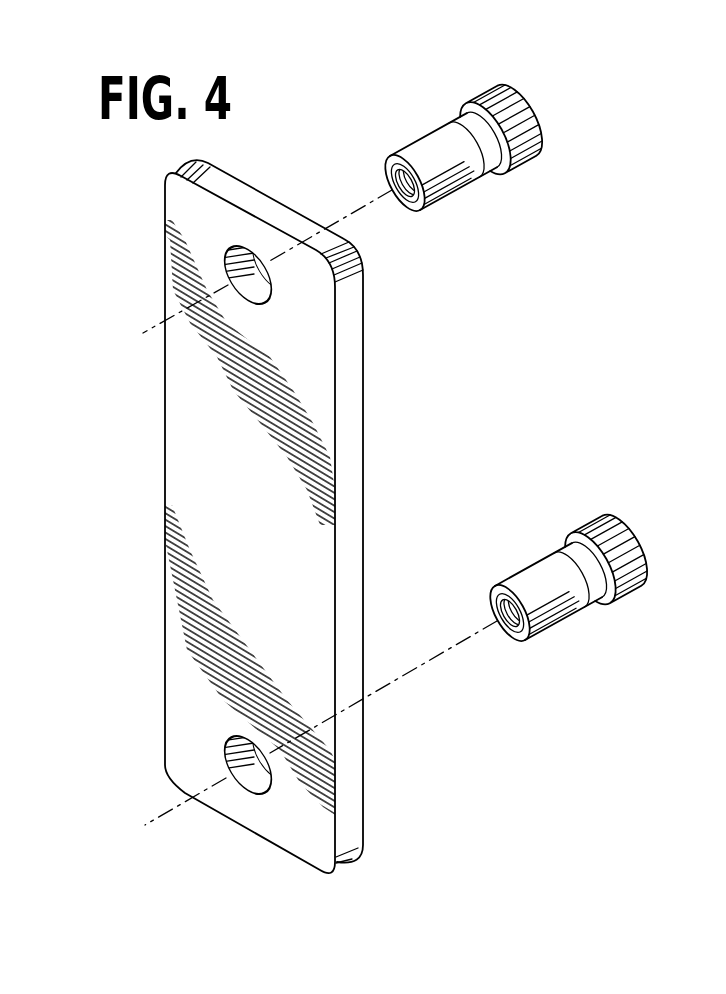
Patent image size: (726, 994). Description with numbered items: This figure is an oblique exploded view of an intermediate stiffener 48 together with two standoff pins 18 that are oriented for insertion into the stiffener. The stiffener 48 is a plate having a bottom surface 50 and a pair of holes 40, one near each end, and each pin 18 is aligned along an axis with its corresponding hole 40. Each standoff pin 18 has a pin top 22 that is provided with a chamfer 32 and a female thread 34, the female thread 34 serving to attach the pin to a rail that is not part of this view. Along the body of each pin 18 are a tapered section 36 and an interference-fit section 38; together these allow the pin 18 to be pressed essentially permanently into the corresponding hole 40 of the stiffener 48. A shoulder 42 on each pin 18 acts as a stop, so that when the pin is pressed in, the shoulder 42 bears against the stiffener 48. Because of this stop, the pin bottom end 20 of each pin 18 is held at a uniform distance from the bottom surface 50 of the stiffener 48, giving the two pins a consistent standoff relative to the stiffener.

The standoff pin 18 is at (487, 378).
The pin bottom end 20 is at (523, 100).
The pin top 22 is at (388, 158).
The chamfer 32 is at (382, 172).
The female thread 34 is at (393, 183).
The tapered section 36 is at (488, 165).
The interference-fit section 38 is at (512, 160).
The hole 40 is at (225, 274).
The shoulder 42 is at (473, 103).
The intermediate stiffener 48 is at (182, 392).
The bottom surface 50 is at (363, 390).